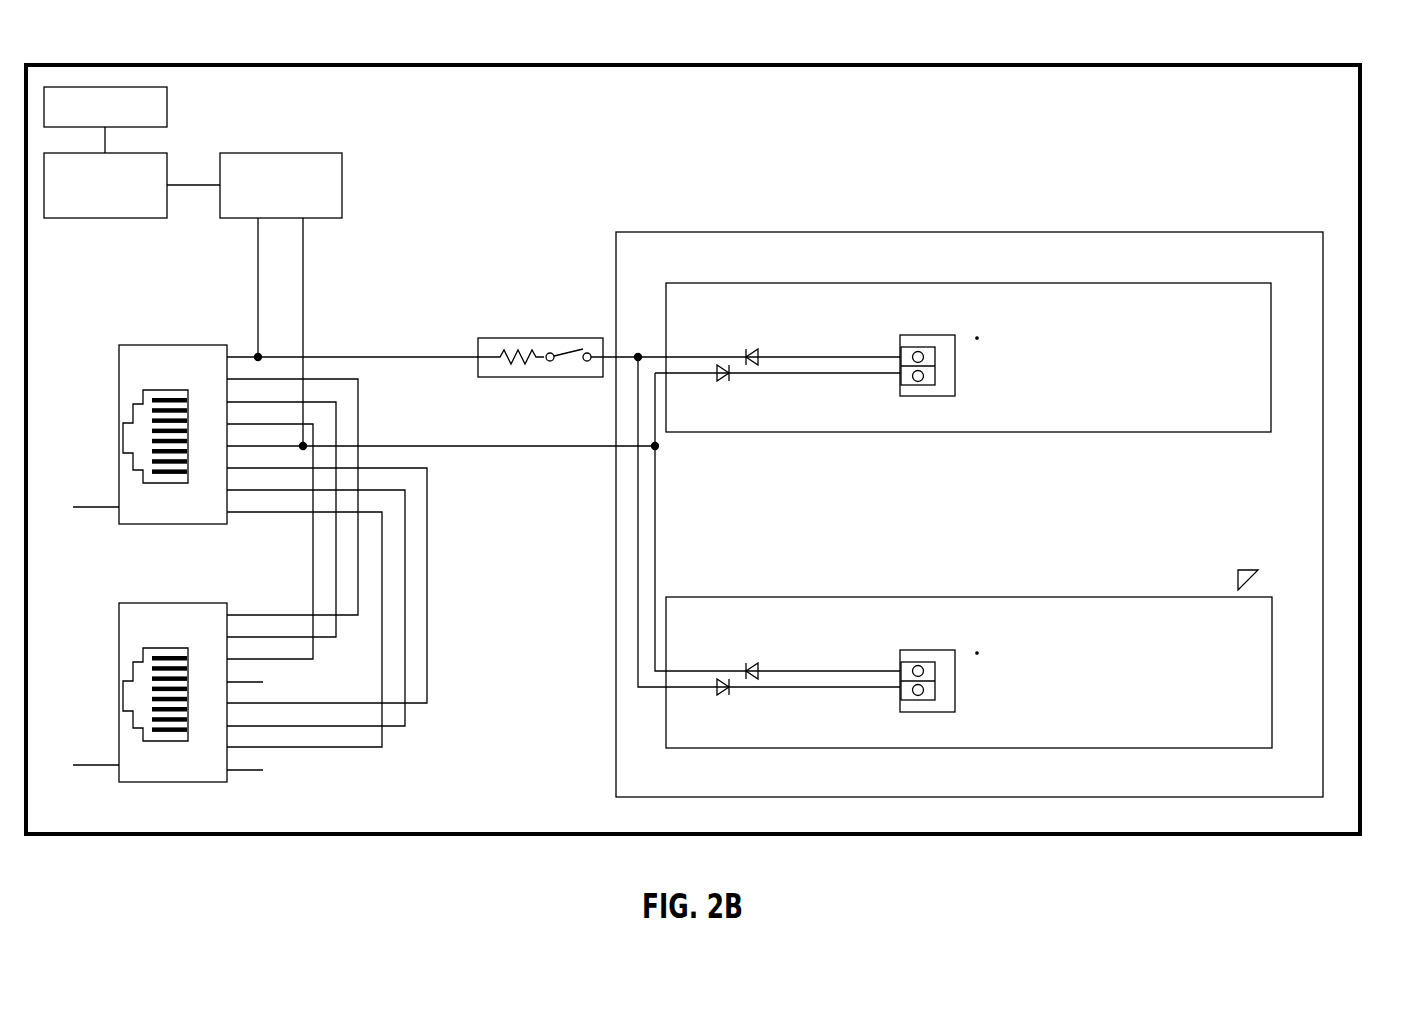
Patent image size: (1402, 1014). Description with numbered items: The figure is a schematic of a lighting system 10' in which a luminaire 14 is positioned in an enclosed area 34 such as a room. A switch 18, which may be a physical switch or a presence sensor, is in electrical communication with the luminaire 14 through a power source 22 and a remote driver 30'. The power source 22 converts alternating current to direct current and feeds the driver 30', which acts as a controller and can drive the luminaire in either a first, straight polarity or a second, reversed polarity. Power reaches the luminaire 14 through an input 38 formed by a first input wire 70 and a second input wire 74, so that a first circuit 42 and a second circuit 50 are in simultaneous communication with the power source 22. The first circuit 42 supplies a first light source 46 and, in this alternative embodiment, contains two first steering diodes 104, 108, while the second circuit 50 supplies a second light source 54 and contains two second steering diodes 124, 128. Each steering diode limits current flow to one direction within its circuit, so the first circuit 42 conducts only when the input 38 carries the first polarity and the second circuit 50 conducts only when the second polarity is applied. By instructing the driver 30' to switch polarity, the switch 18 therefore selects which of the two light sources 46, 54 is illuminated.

The system 10' is at (710, 460).
The luminaire 14 is at (1092, 232).
The switch 18 is at (168, 105).
The power source 22 is at (106, 218).
The remote driver 30' is at (281, 168).
The enclosed area 34 is at (1320, 838).
The input 38 is at (598, 404).
The first circuit 42 is at (1232, 283).
The first light source 46 is at (993, 317).
The second circuit 50 is at (1227, 748).
The second light source 54 is at (993, 633).
The first input wire 70 is at (638, 354).
The second input wire 74 is at (655, 446).
The first steering diode 104 is at (717, 370).
The first steering diode 108 is at (751, 350).
The second steering diode 124 is at (717, 686).
The second steering diode 128 is at (751, 665).